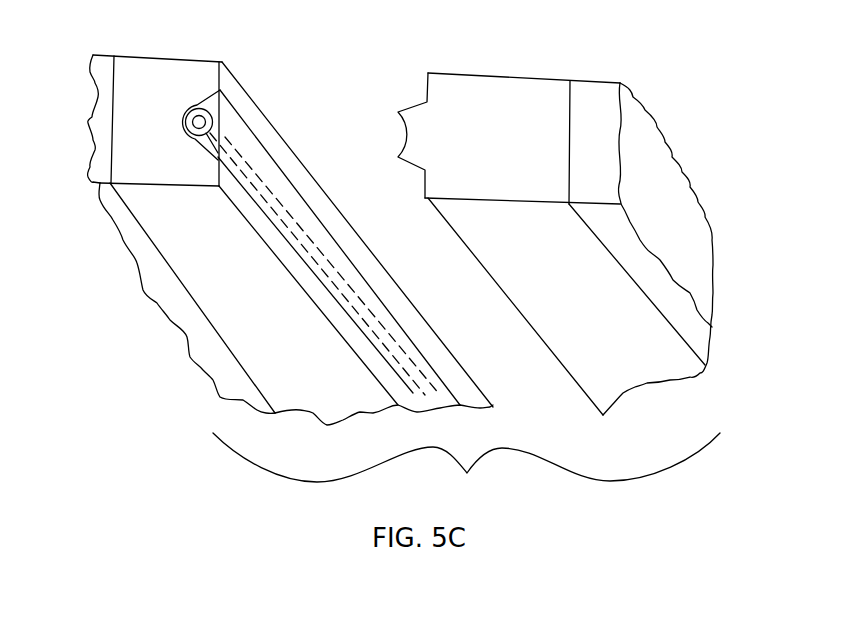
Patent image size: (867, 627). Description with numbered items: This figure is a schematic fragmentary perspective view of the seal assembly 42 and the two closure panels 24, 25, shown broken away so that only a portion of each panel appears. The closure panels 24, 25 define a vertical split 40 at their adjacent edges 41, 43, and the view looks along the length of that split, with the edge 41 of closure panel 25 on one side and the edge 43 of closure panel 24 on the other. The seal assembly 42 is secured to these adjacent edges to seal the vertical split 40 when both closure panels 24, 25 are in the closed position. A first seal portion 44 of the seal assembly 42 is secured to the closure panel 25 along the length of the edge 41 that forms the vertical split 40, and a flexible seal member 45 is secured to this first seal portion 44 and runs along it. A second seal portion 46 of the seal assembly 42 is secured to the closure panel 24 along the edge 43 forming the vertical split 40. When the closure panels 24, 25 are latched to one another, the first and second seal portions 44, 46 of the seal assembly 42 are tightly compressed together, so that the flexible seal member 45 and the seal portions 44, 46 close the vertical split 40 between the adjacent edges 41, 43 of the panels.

The closure panel 24 is at (658, 254).
The closure panel 25 is at (91, 69).
The vertical split 40 is at (319, 135).
The adjacent edge 41 is at (198, 300).
The seal assembly 42 is at (466, 466).
The adjacent edge 43 is at (680, 340).
The first seal portion 44 is at (177, 186).
The flexible seal member 45 is at (288, 207).
The second seal portion 46 is at (475, 73).